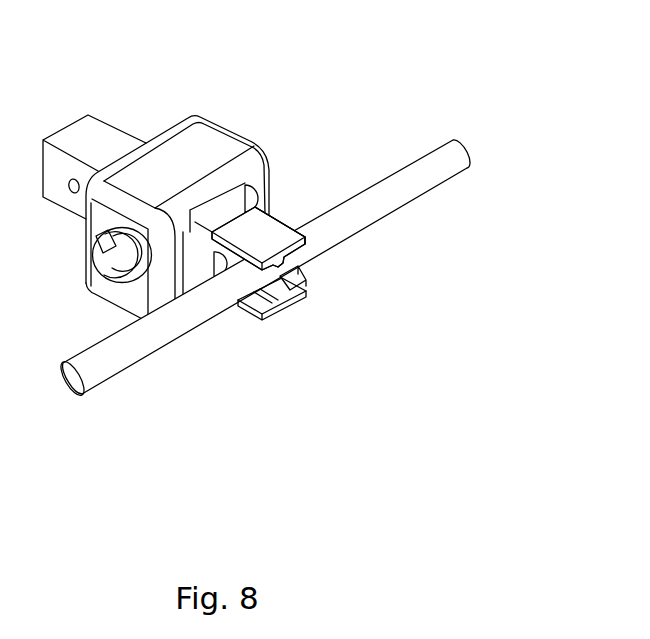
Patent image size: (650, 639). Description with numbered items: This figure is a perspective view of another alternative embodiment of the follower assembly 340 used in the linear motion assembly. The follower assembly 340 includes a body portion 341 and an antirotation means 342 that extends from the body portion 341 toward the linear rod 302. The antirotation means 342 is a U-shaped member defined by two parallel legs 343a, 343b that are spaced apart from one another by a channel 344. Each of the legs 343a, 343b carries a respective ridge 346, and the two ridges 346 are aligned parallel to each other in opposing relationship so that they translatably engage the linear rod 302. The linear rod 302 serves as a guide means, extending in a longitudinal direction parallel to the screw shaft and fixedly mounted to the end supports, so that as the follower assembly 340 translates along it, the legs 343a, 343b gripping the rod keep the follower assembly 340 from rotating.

The linear rod 302 is at (463, 136).
The follower assembly 340 is at (118, 118).
The body portion 341 is at (197, 147).
The antirotation means 342 is at (265, 230).
The leg 343a is at (288, 217).
The leg 343b is at (238, 317).
The channel 344 is at (312, 298).
The ridge 346 is at (287, 270).